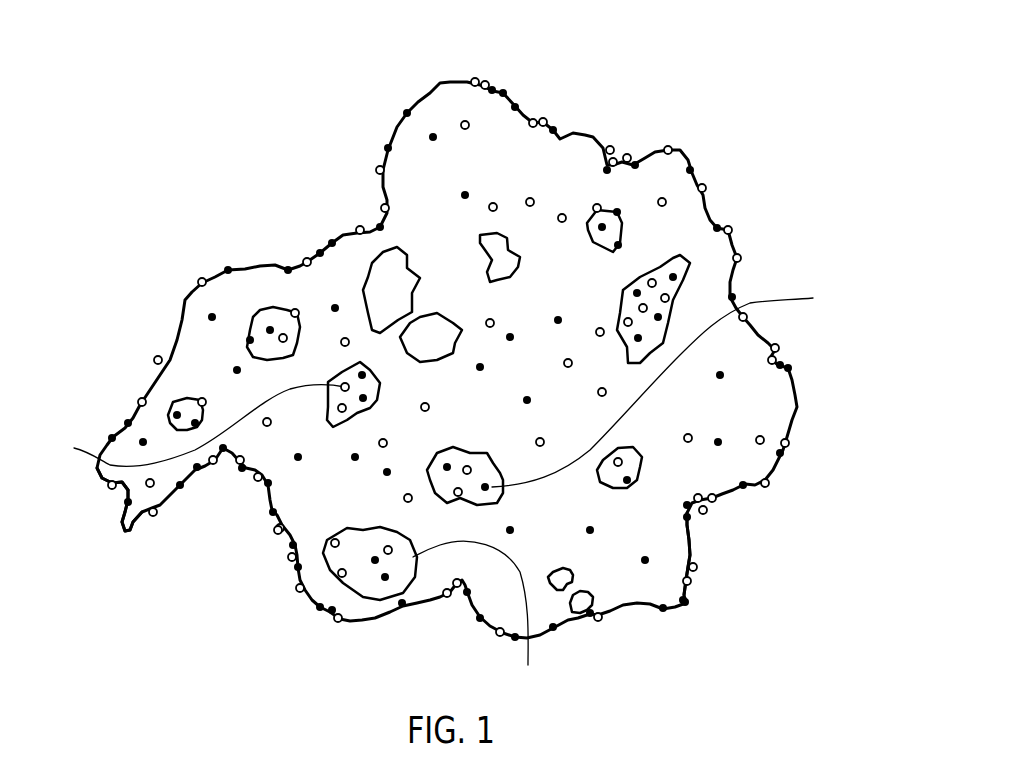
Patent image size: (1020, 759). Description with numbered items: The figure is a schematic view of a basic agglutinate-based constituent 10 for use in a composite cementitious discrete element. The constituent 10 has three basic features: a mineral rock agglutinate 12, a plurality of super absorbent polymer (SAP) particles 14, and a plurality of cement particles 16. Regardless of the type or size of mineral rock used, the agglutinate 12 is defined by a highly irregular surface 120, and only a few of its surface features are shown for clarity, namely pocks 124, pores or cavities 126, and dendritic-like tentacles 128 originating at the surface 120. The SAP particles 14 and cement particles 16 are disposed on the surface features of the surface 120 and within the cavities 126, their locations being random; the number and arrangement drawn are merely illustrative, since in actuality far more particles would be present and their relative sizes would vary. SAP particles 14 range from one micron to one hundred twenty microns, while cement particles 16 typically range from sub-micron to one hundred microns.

The agglutinate-based constituent 10 is at (251, 112).
The mineral rock agglutinate 12 is at (740, 418).
The super absorbent polymer particles 14 is at (433, 137).
The cement particles 16 is at (465, 125).
The irregular surface 120 is at (690, 542).
The pocks 124 is at (195, 400).
The pores or cavities 126 is at (443, 489).
The dendritic-like tentacles 128 is at (127, 533).